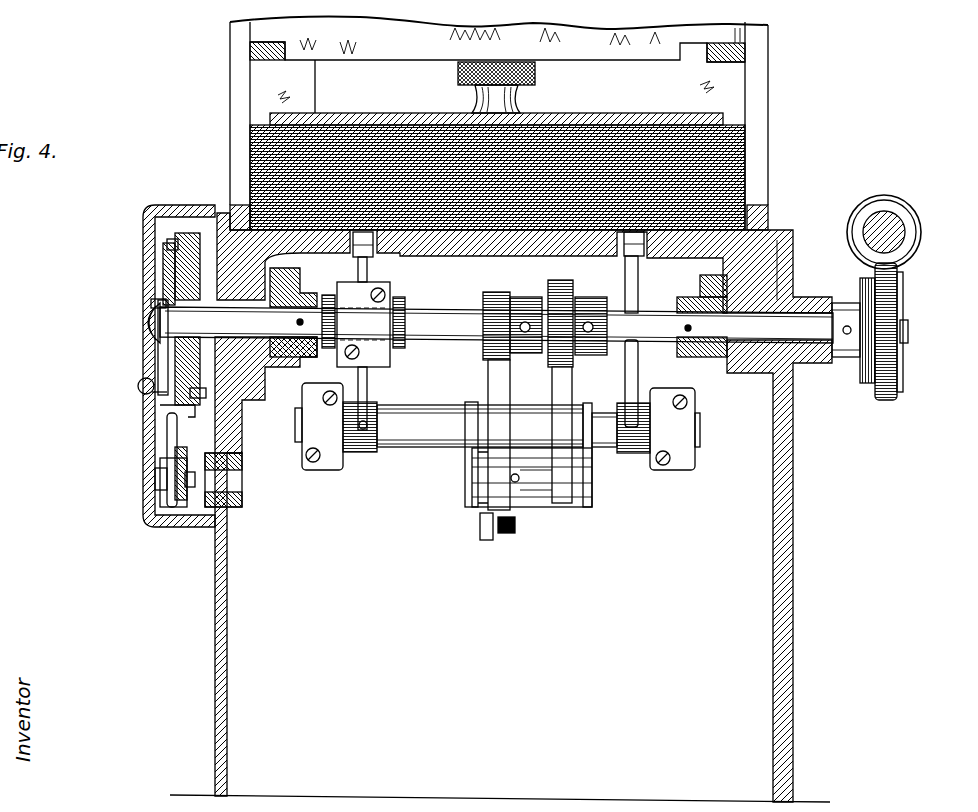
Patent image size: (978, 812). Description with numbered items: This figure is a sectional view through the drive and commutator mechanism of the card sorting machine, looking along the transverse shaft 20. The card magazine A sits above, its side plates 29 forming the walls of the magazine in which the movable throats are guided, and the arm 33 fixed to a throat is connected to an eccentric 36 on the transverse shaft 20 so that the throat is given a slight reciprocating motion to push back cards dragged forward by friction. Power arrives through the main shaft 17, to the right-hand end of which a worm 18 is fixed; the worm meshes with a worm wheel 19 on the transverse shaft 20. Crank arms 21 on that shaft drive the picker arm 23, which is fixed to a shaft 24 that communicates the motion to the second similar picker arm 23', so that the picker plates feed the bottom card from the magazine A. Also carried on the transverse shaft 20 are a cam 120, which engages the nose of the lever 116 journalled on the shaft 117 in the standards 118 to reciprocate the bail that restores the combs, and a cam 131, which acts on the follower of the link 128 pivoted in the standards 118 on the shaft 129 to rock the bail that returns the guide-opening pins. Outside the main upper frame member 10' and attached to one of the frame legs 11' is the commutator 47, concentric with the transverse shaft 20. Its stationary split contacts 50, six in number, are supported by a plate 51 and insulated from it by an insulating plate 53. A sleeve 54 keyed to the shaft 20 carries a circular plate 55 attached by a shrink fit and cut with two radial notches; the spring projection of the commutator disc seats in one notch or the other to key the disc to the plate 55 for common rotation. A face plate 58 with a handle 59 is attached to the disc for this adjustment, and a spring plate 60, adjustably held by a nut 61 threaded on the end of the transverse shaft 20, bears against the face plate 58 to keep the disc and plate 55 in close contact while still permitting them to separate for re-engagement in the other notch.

The main upper frame member 10' is at (510, 239).
The frame leg 11' is at (484, 569).
The main shaft 17 is at (893, 238).
The worm 18 is at (908, 207).
The worm wheel 19 is at (880, 310).
The transverse shaft 20 is at (808, 330).
The crank arms 21 is at (337, 300).
The picker arm 23 is at (380, 331).
The second picker arm 23' is at (613, 329).
The shaft 24 is at (417, 428).
The side plates 29 is at (243, 58).
The arm 33 is at (707, 270).
The eccentrics 36 is at (293, 300).
The commutator 47 is at (150, 358).
The stationary split contacts 50 is at (165, 425).
The plate 51 is at (160, 410).
The insulating plate 53 is at (177, 458).
The sleeve 54 is at (160, 297).
The circular plate 55 is at (170, 245).
The face plate 58 is at (170, 258).
The handle 59 is at (148, 382).
The spring plate 60 is at (163, 282).
The nut 61 is at (148, 317).
The lever 116 is at (495, 495).
The shaft 117 is at (525, 430).
The standards 118 is at (475, 480).
The cam 120 is at (498, 312).
The link 128 is at (562, 480).
The shaft 129 is at (542, 478).
The cam 131 is at (560, 285).
The card magazine A is at (527, 87).